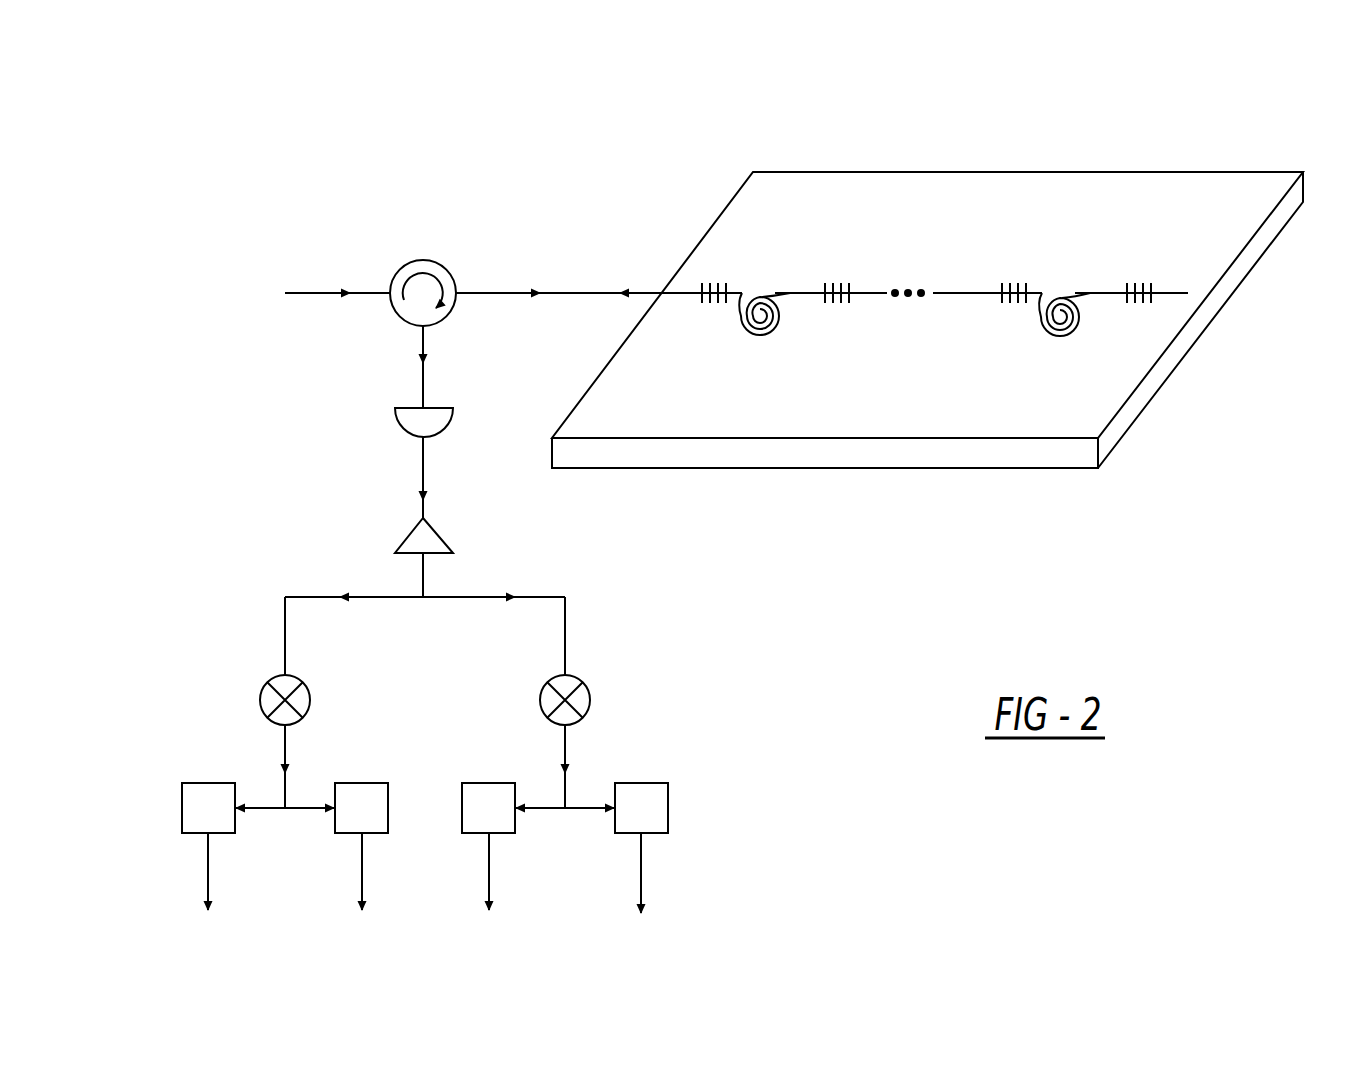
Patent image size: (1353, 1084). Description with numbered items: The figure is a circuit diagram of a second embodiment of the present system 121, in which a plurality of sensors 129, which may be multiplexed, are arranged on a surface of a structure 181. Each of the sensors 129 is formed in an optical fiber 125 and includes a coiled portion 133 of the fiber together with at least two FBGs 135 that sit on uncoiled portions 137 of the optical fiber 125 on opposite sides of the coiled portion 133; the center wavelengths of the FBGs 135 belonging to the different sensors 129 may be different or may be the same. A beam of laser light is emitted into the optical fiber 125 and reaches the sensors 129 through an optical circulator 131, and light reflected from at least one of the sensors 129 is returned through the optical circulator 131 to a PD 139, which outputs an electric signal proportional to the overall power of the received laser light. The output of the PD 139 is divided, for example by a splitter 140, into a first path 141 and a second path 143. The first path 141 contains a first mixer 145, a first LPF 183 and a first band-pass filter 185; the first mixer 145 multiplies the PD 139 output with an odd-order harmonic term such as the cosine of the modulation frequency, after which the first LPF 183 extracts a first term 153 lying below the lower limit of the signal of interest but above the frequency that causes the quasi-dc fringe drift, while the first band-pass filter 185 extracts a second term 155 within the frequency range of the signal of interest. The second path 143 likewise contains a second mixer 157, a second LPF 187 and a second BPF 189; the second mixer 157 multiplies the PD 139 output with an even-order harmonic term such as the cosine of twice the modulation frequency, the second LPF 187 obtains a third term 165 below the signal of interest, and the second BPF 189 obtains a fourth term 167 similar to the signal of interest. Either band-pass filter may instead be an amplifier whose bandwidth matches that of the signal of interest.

The system 121 is at (308, 138).
The optical fiber 125 is at (575, 293).
The sensors 129 is at (722, 370).
The optical circulator 131 is at (425, 261).
The coiled portion 133 is at (772, 333).
The FBGs 135 is at (715, 284).
The uncoiled portions 137 is at (800, 293).
The PD 139 is at (396, 420).
The splitter 140 is at (440, 540).
The first path 141 is at (288, 597).
The second path 143 is at (565, 597).
The first mixer 145 is at (260, 702).
The first term 153 is at (208, 858).
The second term 155 is at (362, 858).
The second mixer 157 is at (590, 700).
The third term 165 is at (489, 860).
The fourth term 167 is at (641, 858).
The structure 181 is at (1082, 182).
The first LPF 183 is at (182, 805).
The first band-pass filter 185 is at (362, 783).
The second LPF 187 is at (489, 783).
The second BPF 189 is at (668, 808).